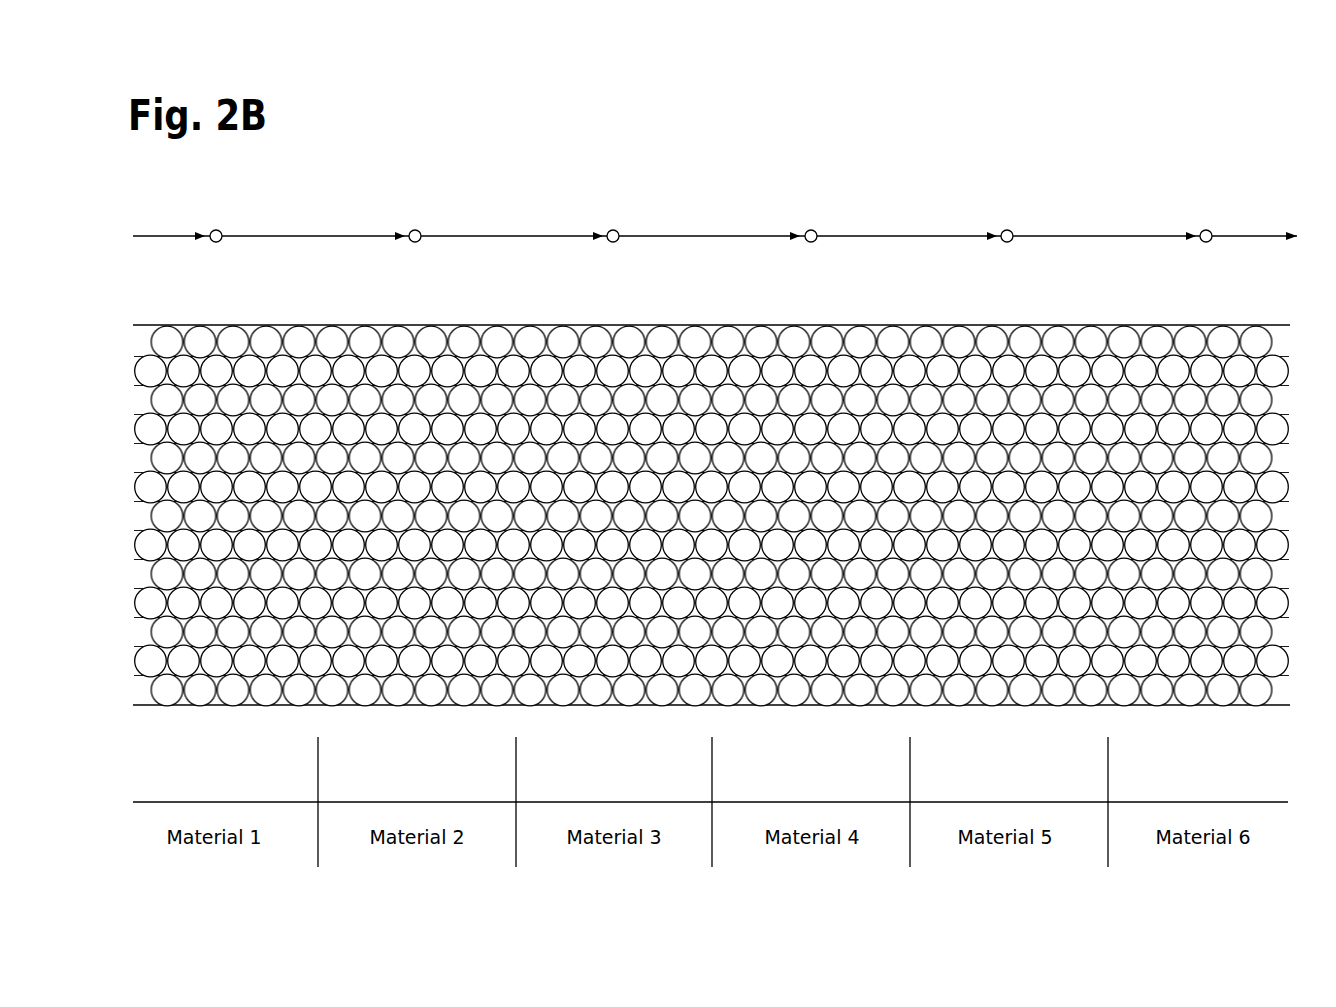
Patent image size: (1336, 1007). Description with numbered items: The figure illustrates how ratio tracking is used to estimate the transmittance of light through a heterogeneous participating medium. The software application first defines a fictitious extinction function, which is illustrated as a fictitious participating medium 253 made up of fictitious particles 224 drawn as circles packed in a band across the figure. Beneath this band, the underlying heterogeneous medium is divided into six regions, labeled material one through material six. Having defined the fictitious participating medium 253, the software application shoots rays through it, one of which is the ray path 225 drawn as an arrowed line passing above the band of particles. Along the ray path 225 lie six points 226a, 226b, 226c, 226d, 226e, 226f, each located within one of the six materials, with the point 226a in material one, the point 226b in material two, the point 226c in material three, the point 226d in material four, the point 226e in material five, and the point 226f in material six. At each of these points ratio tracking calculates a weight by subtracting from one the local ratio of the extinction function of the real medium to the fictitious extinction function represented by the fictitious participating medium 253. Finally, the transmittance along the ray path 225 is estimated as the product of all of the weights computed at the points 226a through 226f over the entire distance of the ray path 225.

The ray path 225 is at (728, 227).
The point 226a is at (245, 207).
The point 226b is at (444, 207).
The point 226c is at (631, 217).
The point 226d is at (840, 207).
The point 226e is at (1025, 217).
The point 226f is at (1224, 217).
The fictitious participating medium 253 is at (711, 367).
The fictitious particles 224 is at (952, 308).